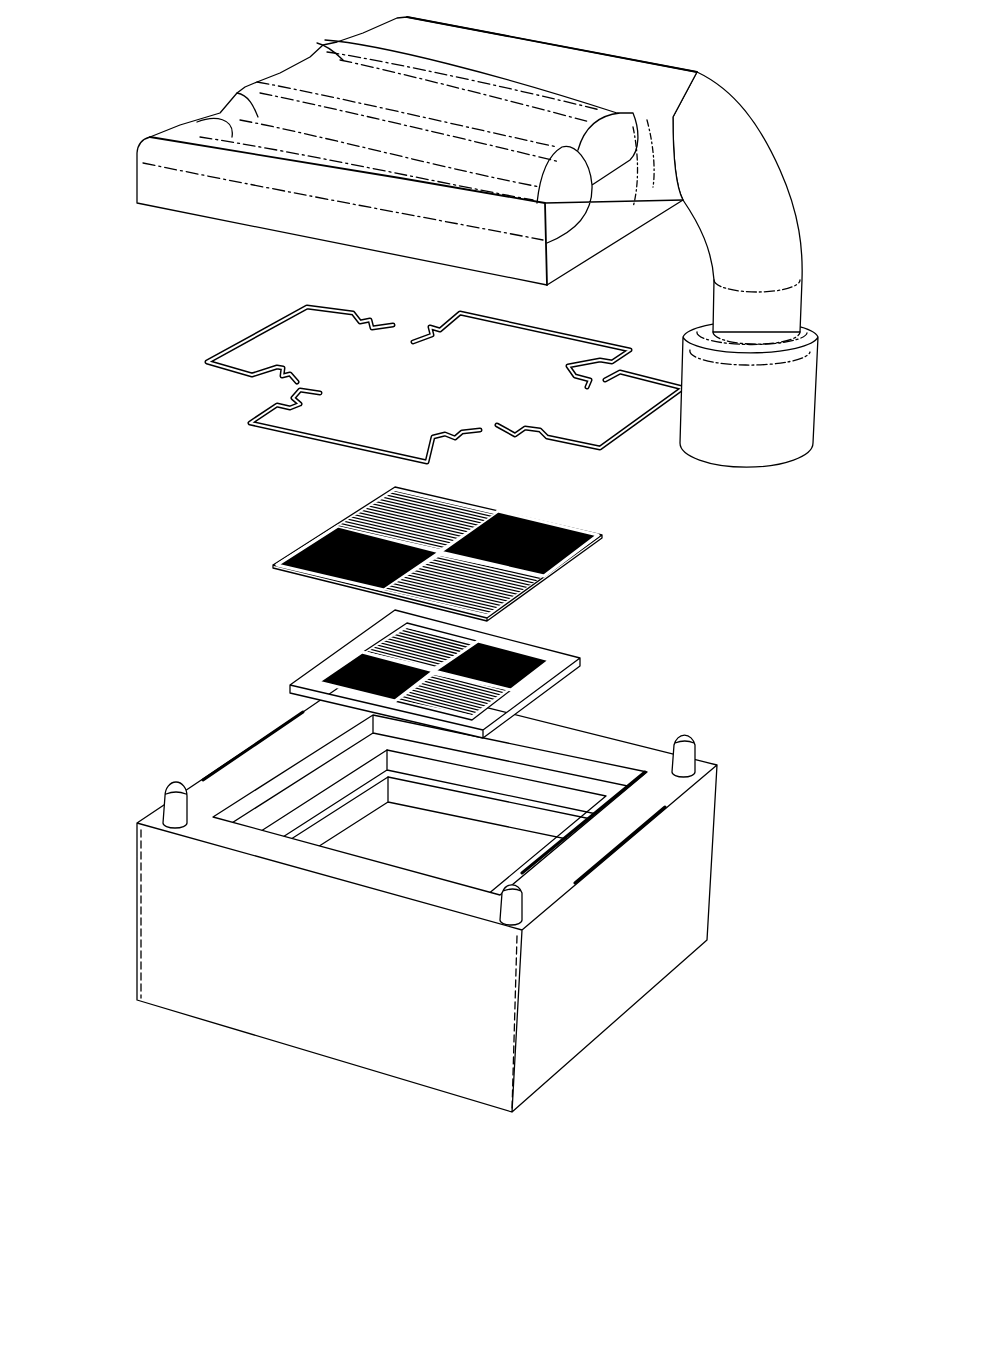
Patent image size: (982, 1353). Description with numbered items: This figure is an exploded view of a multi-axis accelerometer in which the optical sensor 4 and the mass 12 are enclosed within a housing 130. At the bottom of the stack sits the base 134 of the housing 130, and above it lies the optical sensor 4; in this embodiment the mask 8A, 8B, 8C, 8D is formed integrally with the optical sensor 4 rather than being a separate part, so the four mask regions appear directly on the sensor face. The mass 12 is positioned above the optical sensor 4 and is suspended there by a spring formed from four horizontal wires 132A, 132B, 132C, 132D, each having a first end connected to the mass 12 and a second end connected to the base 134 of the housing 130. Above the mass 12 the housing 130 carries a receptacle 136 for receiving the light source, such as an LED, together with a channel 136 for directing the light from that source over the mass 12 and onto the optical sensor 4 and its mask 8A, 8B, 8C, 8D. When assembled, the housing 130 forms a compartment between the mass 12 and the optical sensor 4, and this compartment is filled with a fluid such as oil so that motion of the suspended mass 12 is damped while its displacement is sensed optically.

The housing 130 is at (110, 195).
The horizontal wire 132A is at (248, 338).
The horizontal wire 132B is at (555, 334).
The horizontal wire 132C is at (628, 440).
The horizontal wire 132D is at (290, 434).
The base 134 is at (717, 823).
The receptacle and channel 136 is at (775, 186).
The mass 12 is at (273, 566).
The optical sensor 4 is at (420, 713).
The mask 8A is at (350, 656).
The mask 8B is at (405, 626).
The mask 8C is at (517, 640).
The mask 8D is at (500, 684).